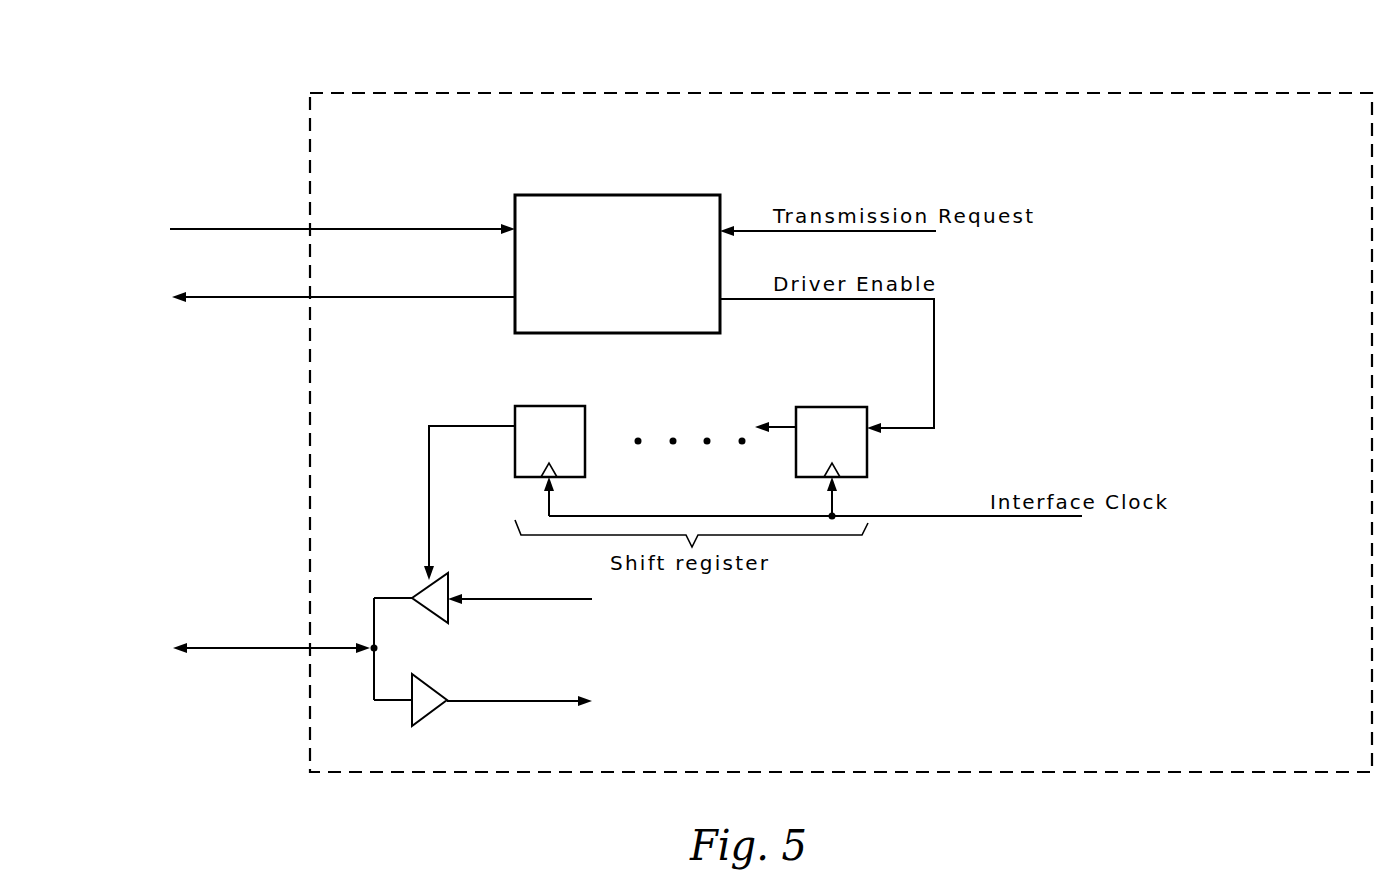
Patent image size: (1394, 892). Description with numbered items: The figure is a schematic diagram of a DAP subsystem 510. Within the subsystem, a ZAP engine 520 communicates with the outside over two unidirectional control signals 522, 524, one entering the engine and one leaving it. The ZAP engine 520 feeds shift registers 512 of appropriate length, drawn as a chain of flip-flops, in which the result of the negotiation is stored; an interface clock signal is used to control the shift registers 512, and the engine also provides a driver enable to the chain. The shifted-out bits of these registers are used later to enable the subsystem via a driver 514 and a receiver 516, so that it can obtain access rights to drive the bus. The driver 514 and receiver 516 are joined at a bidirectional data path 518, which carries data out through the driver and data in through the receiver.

The DAP subsystem 510 is at (1114, 93).
The shift registers 512 is at (556, 406).
The driver 514 is at (504, 599).
The receiver 516 is at (536, 701).
The bidirectional data path x 518 is at (226, 648).
The ZAP engine 520 is at (663, 195).
The unidirectional control signal 522 is at (361, 229).
The unidirectional control signal 524 is at (361, 297).